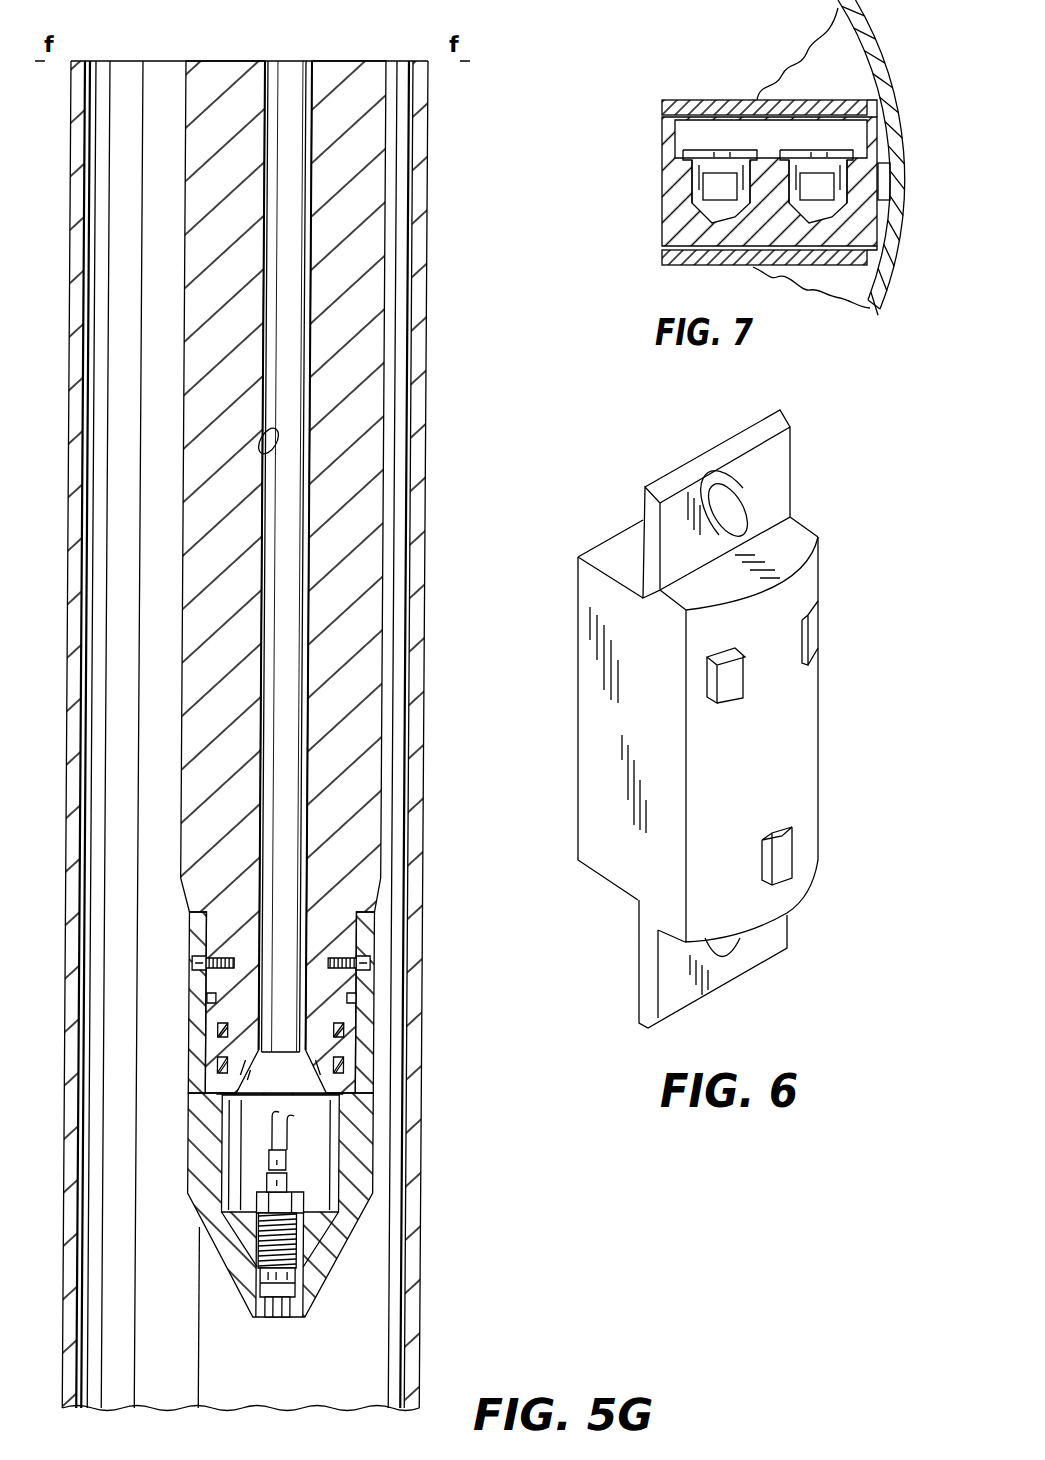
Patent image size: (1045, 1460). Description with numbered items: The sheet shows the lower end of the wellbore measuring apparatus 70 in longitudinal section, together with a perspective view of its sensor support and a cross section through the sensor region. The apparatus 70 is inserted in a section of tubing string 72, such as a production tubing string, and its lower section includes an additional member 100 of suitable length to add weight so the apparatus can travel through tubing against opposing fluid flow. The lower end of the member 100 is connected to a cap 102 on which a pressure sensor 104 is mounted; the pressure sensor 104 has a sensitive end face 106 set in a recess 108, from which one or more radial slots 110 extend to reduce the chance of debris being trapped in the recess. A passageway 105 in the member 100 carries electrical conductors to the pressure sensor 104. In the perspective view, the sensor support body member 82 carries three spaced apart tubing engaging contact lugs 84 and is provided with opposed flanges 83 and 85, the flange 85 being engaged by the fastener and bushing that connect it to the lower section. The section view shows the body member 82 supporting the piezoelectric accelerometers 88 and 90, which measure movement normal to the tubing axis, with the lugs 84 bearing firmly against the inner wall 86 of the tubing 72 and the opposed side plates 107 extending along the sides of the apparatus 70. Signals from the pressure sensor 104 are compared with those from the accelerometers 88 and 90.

In FIG. 5G, the apparatus 70 is at (178, 260).
In FIG. 5G, the tubing string 72 is at (73, 135).
In FIG. 7, the tubing string 72 is at (888, 70).
In FIG. 7, the sensor support body member 82 is at (662, 207).
In FIG. 6, the sensor support body member 82 is at (578, 822).
In FIG. 6, the flange 83 is at (697, 457).
In FIG. 7, the tubing engaging contact lugs 84 is at (890, 182).
In FIG. 6, the tubing engaging contact lugs 84 is at (818, 632).
In FIG. 6, the flange 85 is at (747, 973).
In FIG. 7, the inner wall 86 is at (862, 292).
In FIG. 7, the piezoelectric accelerometer 88 is at (705, 188).
In FIG. 7, the piezoelectric accelerometer 90 is at (810, 193).
In FIG. 5G, the additional member 100 is at (186, 366).
In FIG. 5G, the cap 102 is at (196, 1028).
In FIG. 5G, the pressure sensor 104 is at (270, 1288).
In FIG. 5G, the passageway 105 is at (262, 451).
In FIG. 5G, the sensitive end face 106 is at (293, 1318).
In FIG. 7, the side plates 107 is at (702, 100).
In FIG. 5G, the recess 108 is at (280, 1318).
In FIG. 5G, the radial slots 110 is at (312, 1314).